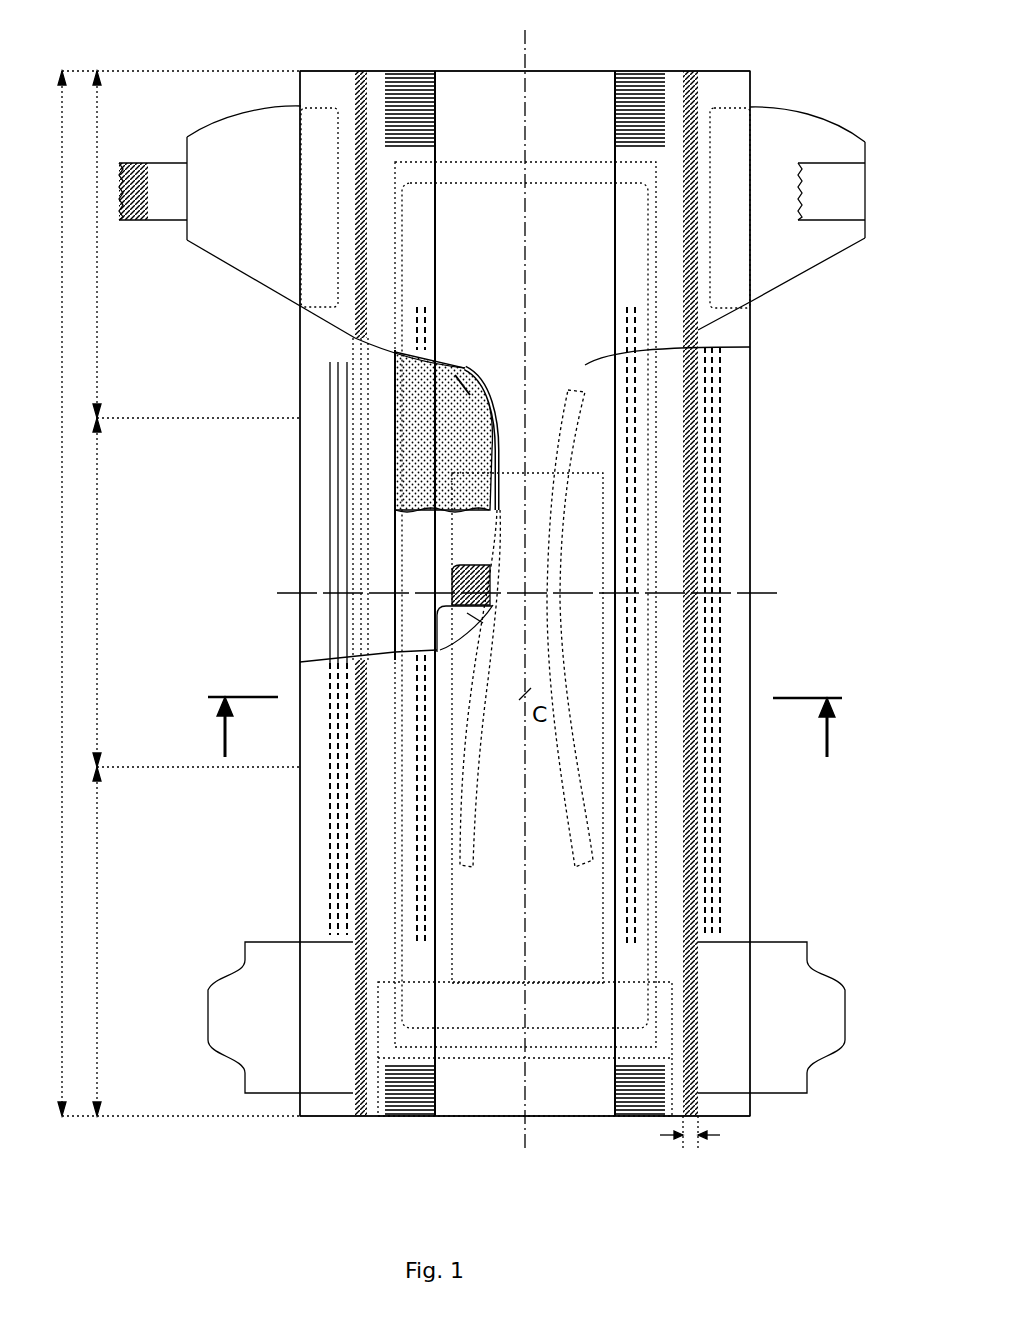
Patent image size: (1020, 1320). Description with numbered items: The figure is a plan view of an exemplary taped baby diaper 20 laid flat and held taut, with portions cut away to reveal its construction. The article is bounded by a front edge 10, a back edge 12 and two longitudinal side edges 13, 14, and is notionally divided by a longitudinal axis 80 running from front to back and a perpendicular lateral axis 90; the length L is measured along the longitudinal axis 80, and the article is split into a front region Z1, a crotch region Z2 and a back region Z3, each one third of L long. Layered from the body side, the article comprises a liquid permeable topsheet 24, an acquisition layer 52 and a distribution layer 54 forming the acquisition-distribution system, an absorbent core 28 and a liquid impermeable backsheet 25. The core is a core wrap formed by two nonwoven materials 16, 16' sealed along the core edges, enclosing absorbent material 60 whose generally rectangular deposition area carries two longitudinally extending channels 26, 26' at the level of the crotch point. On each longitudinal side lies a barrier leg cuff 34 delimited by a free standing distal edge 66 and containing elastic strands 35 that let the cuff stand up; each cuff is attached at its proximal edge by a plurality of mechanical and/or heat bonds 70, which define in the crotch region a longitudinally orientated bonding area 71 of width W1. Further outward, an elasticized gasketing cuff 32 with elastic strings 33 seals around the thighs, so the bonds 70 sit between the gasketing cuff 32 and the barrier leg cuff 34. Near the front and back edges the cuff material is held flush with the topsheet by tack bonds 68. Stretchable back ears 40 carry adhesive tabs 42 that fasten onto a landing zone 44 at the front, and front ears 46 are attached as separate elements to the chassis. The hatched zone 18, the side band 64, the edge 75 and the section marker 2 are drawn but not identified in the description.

The front edge 10 is at (480, 1116).
The back edge 12 is at (582, 71).
The longitudinal side edge 13 is at (300, 885).
The longitudinal side edge 14 is at (750, 886).
The nonwoven material 16 is at (527, 728).
The nonwoven material 16' is at (315, 436).
The absorbent core 18 is at (443, 432).
The diaper 20 is at (300, 1130).
The topsheet 24 is at (750, 347).
The backsheet 25 is at (355, 410).
The channel 26 is at (489, 423).
The channel 26' is at (526, 612).
The absorbent core 28 is at (388, 540).
The gasketing cuff 32 is at (345, 690).
The elastic string 33 is at (347, 476).
The barrier leg cuff 34 is at (385, 850).
The elastic element 35 is at (627, 637).
The back ear 40 is at (232, 132).
The adhesive tab 42 is at (160, 185).
The landing zone 44 is at (390, 1100).
The front ear 46 is at (230, 1045).
The acquisition layer 52 is at (483, 623).
The distribution layer 54 is at (490, 585).
The absorbent material 60 is at (468, 385).
The side seam 64 is at (355, 320).
The distal edge 66 is at (612, 1090).
The tack bond 68 is at (412, 95).
The mechanical and/or heat bond 70 is at (347, 785).
The bonding area 71 is at (700, 840).
The cuff distal edge 75 is at (365, 630).
The longitudinal axis 80 is at (525, 1130).
The lateral axis 90 is at (768, 590).
The section line 2 is at (525, 727).
The length L is at (178, 593).
The width W1 is at (690, 1141).
The front region Z1 is at (112, 941).
The crotch region Z2 is at (196, 592).
The back region Z3 is at (196, 244).